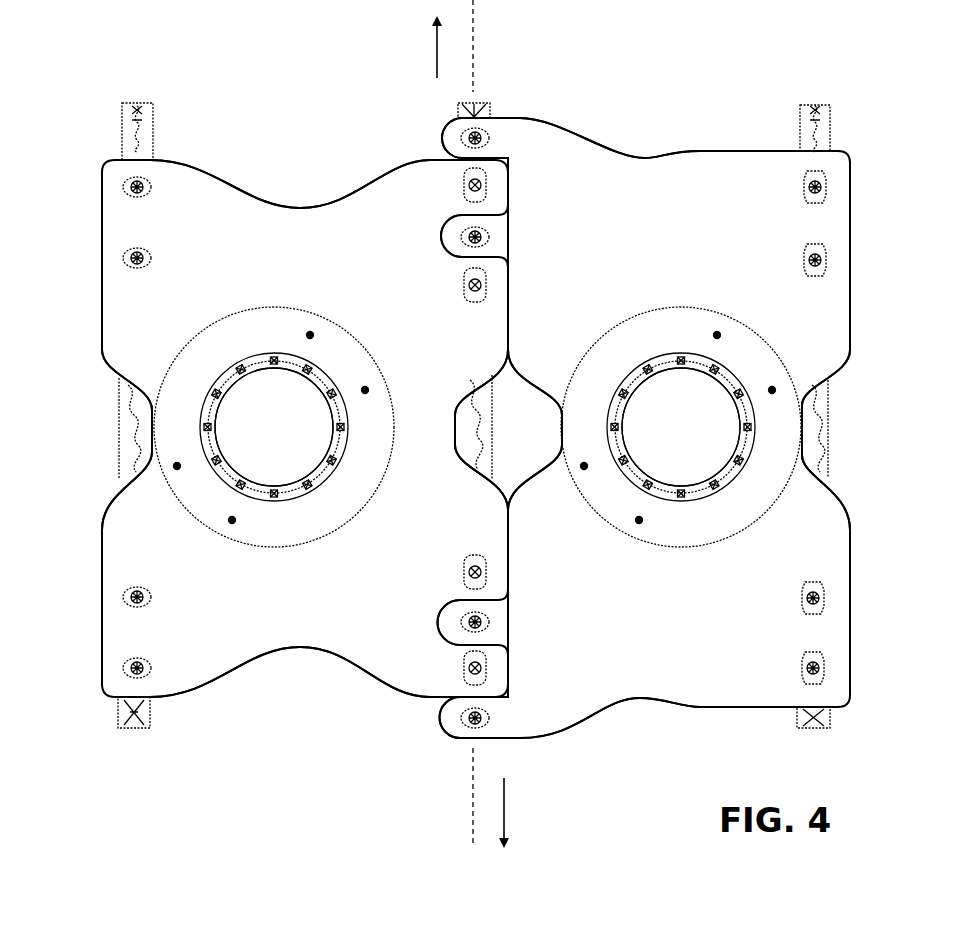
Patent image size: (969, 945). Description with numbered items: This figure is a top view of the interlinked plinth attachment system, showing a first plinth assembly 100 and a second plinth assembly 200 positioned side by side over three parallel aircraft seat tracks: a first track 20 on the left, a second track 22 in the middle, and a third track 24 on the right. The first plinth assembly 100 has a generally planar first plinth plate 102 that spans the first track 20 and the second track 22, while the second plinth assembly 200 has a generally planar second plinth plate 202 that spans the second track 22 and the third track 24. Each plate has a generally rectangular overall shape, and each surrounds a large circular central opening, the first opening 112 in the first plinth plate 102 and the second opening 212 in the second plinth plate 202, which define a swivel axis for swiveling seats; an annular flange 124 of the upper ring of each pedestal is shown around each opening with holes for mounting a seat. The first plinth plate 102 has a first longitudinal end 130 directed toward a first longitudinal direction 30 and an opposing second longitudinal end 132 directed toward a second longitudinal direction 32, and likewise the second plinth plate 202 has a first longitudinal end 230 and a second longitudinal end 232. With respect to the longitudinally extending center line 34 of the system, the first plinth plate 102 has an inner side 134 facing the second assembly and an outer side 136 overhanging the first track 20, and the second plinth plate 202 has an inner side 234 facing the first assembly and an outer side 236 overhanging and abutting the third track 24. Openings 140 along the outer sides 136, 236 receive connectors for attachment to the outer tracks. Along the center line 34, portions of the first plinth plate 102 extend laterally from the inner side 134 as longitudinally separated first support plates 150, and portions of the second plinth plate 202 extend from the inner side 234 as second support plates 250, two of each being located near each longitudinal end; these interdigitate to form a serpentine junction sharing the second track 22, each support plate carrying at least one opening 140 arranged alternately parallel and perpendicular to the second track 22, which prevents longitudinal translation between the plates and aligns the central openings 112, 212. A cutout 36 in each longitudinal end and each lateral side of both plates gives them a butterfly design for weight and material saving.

The first plinth assembly 100 is at (333, 752).
The second plinth assembly 200 is at (600, 755).
The first plinth plate 102 is at (292, 270).
The second plinth plate 202 is at (700, 270).
The annular flange 124 is at (237, 348).
The first opening 112 is at (279, 452).
The second opening 212 is at (688, 465).
The first longitudinal end 130 is at (170, 158).
The second longitudinal end 132 is at (180, 700).
The inner side 134 is at (492, 345).
The outer side 136 is at (120, 322).
The first longitudinal end 230 is at (700, 151).
The second longitudinal end 232 is at (766, 710).
The inner side 234 is at (540, 332).
The outer side 236 is at (838, 335).
The cutout 36 is at (302, 203).
The openings 140 is at (125, 183).
The first support plates 150 is at (497, 178).
The second support plates 250 is at (445, 140).
The first track 20 is at (128, 106).
The third track 24 is at (805, 103).
The second track 22 is at (458, 110).
The first longitudinal direction 30 is at (432, 49).
The second longitudinal direction 32 is at (506, 815).
The center line 34 is at (478, 62).